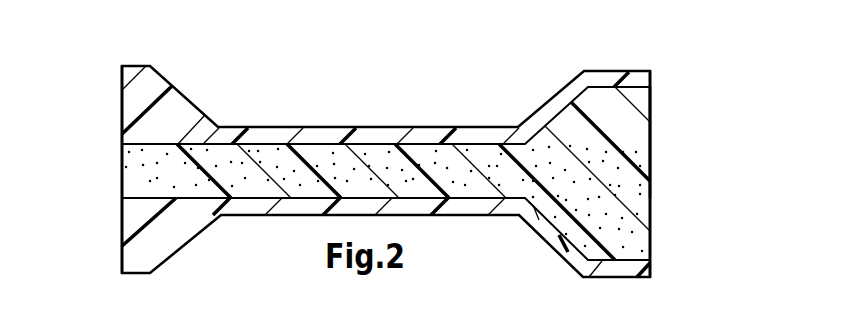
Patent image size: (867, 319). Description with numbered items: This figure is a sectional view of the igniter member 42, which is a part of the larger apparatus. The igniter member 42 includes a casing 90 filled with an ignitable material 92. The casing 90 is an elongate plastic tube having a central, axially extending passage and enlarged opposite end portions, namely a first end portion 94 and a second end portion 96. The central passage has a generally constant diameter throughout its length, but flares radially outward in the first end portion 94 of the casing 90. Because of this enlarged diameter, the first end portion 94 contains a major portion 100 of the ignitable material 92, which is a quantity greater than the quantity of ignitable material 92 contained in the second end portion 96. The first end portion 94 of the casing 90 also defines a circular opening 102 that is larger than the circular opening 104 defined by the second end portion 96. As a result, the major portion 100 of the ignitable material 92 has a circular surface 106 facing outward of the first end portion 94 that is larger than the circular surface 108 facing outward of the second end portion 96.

The igniter member 42 is at (198, 52).
The casing 90 is at (304, 107).
The ignitable material 92 is at (422, 139).
The first end portion 94 is at (636, 70).
The second end portion 96 is at (143, 105).
The major portion 100 is at (602, 215).
The circular opening 102 is at (667, 230).
The circular opening 104 is at (103, 166).
The circular surface 106 is at (653, 172).
The circular surface 108 is at (122, 178).